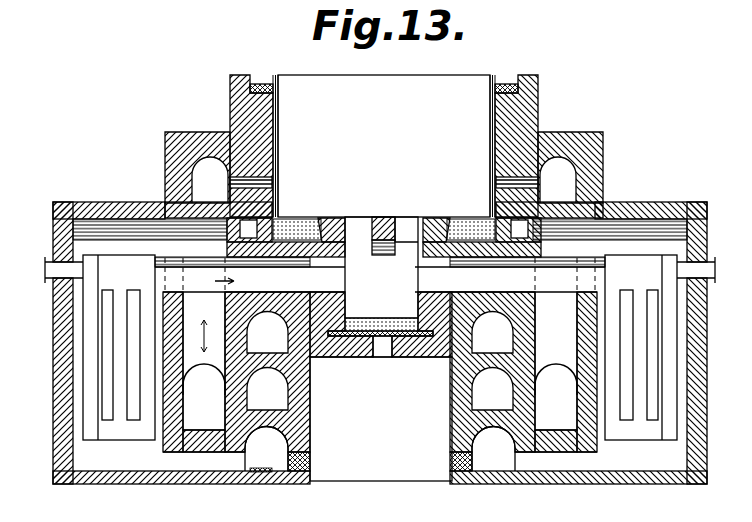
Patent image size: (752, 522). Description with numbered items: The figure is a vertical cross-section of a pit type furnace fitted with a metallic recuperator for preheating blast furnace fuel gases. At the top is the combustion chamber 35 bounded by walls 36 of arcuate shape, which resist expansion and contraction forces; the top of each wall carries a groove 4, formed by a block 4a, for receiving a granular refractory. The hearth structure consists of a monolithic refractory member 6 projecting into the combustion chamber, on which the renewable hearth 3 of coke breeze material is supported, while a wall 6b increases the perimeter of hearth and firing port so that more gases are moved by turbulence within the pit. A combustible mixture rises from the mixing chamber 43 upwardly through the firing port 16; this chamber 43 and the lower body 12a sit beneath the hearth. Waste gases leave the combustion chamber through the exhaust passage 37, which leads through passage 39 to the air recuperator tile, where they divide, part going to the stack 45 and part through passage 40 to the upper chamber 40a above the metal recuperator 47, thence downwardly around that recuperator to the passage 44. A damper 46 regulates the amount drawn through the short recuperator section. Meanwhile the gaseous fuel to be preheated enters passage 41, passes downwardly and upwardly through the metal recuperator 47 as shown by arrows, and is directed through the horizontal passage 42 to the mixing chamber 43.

The hearth 3 is at (291, 222).
The groove 4 is at (263, 52).
The block 4a is at (522, 66).
The monolithic refractory member 6 is at (328, 218).
The wall 6b is at (393, 218).
The crankcase 12a is at (411, 359).
The firing port 16 is at (364, 222).
The combustion chamber 35 is at (438, 159).
The walls 36 is at (279, 127).
The exhaust or waste gas passage 37 is at (245, 196).
The passage 39 is at (222, 200).
The passage 40 is at (214, 415).
The chamber 40a is at (165, 243).
The passage 41 is at (48, 268).
The horizontal passage 42 is at (380, 275).
The mixing chamber 43 is at (392, 298).
The passage 44 is at (380, 463).
The stack 45 is at (278, 460).
The damper 46 is at (262, 473).
The metal recuperator 47 is at (84, 357).